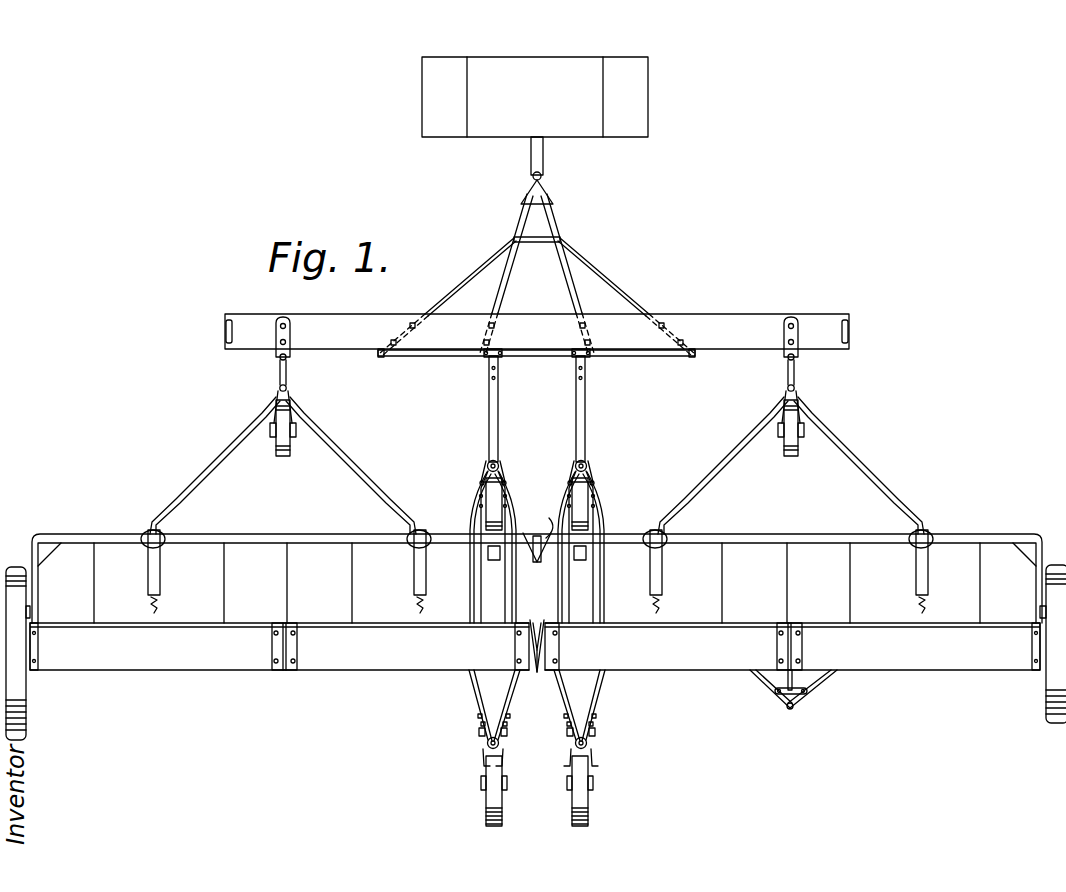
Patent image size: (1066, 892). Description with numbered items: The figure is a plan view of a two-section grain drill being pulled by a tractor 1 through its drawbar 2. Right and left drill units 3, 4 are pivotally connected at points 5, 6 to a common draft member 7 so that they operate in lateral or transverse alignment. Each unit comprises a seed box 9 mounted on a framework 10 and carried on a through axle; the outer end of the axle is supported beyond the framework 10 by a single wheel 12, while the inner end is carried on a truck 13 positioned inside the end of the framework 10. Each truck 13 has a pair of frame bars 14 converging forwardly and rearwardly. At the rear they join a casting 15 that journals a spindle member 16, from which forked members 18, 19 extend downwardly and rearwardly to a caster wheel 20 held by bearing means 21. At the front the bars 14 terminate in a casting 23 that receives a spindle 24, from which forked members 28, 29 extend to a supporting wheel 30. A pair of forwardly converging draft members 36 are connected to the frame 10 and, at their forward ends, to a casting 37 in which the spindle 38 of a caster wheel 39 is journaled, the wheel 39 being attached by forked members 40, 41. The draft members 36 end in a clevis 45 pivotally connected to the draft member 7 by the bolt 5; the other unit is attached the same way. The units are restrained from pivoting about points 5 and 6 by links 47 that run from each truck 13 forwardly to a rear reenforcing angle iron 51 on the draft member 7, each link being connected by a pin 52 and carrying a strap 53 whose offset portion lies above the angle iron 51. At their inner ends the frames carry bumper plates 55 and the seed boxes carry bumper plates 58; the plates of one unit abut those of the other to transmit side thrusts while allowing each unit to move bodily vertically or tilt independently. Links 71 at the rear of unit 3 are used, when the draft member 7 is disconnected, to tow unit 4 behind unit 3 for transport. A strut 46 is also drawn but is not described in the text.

The tractor 1 is at (490, 137).
The drawbar 2 is at (530, 155).
The right drill unit 3 is at (735, 674).
The left drill unit 4 is at (272, 677).
The pivot point (bolt) 5 is at (278, 358).
The pivot point (bolt) 6 is at (798, 358).
The common draft member 7 is at (736, 314).
The seed box 9 is at (221, 664).
The framework 10 is at (263, 540).
The single wheel 12 is at (27, 700).
The truck 13 is at (468, 519).
The frame bars 14 is at (477, 704).
The casting 15 is at (480, 733).
The spindle member 16 is at (486, 744).
The forked member 18 is at (486, 753).
The forked member 19 is at (504, 755).
The caster wheel 20 is at (485, 823).
The bearing means 21 is at (480, 783).
The casting 23 is at (503, 465).
The spindle 24 is at (497, 462).
The forked member 28 is at (480, 478).
The forked member 29 is at (506, 481).
The supporting wheel 30 is at (495, 541).
The draft members 36 is at (211, 472).
The casting 37 is at (291, 389).
The spindle 38 is at (279, 390).
The caster wheel 39 is at (284, 457).
The forked member 40 is at (273, 433).
The forked member 41 is at (294, 434).
The clevis 45 is at (287, 358).
The strut 46 is at (270, 436).
The links 47 is at (488, 436).
The rear reenforcing angle iron 51 is at (526, 356).
The pin 52 is at (483, 358).
The strap 53 is at (490, 372).
The bumper plate 55 is at (528, 534).
The bumper plate 58 is at (537, 673).
The links 71 is at (768, 689).